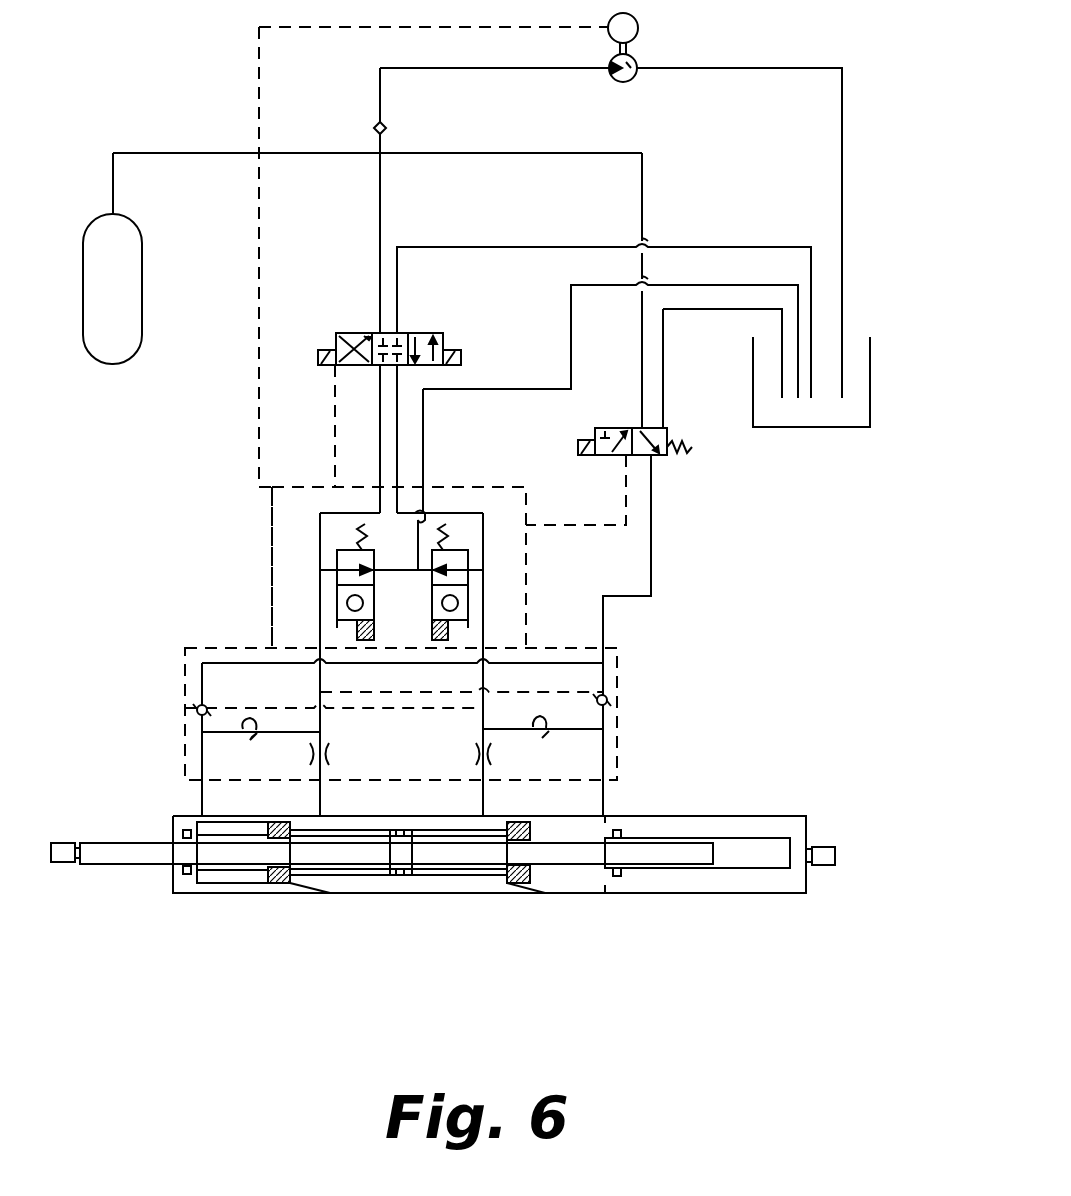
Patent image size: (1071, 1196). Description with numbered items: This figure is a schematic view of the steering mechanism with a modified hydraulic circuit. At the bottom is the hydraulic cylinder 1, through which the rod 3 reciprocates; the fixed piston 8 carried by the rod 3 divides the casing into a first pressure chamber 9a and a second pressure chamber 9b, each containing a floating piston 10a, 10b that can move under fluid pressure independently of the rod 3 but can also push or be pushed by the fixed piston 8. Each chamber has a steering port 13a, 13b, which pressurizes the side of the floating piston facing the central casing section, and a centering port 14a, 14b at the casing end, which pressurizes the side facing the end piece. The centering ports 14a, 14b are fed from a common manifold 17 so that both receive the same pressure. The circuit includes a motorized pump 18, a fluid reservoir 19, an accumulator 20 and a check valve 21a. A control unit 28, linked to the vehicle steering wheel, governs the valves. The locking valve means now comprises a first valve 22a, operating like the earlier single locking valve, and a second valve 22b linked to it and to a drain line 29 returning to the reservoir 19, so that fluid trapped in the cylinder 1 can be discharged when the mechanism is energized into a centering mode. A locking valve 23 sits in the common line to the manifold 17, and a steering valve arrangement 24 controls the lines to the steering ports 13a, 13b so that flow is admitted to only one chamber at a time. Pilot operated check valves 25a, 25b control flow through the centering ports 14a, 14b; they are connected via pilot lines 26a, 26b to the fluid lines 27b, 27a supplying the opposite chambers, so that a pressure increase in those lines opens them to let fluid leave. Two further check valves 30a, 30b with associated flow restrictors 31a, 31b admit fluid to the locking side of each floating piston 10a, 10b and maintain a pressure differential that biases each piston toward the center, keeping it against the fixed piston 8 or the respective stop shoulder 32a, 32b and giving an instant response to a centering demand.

The hydraulic cylinder 1 is at (630, 905).
The rod 3 is at (140, 855).
The fixed piston 8 is at (400, 855).
The first pressure chamber 9a is at (225, 875).
The second pressure chamber 9b is at (593, 838).
The floating piston 10a is at (273, 883).
The floating piston 10b is at (525, 883).
The first inlet/outlet steering port 13a is at (322, 818).
The second inlet/outlet steering port 13b is at (485, 818).
The first inlet/outlet centering port 14a is at (190, 818).
The second inlet/outlet centering port 14b is at (605, 815).
The common manifold 17 is at (375, 656).
The motorized pump 18 is at (634, 62).
The fluid reservoir 19 is at (870, 388).
The accumulator 20 is at (122, 288).
The check valve 21a is at (376, 126).
The first valve 22a is at (337, 627).
The second valve 22b is at (468, 606).
The locking valve 23 is at (603, 458).
The steering valve arrangement 24 is at (420, 333).
The pilot operated check valve 25a is at (196, 709).
The pilot operated check valve 25b is at (608, 704).
The pilot line 26a is at (245, 708).
The pilot line 26b is at (555, 692).
The fluid line 27a is at (320, 541).
The fluid line 27b is at (483, 541).
The control unit 28 is at (268, 520).
The drain line 29 is at (485, 389).
The check valve 30a is at (248, 734).
The check valve 30b is at (540, 732).
The flow restrictor 31a is at (330, 755).
The flow restrictor 31b is at (475, 755).
The stop shoulder 32a is at (300, 883).
The stop shoulder 32b is at (505, 883).